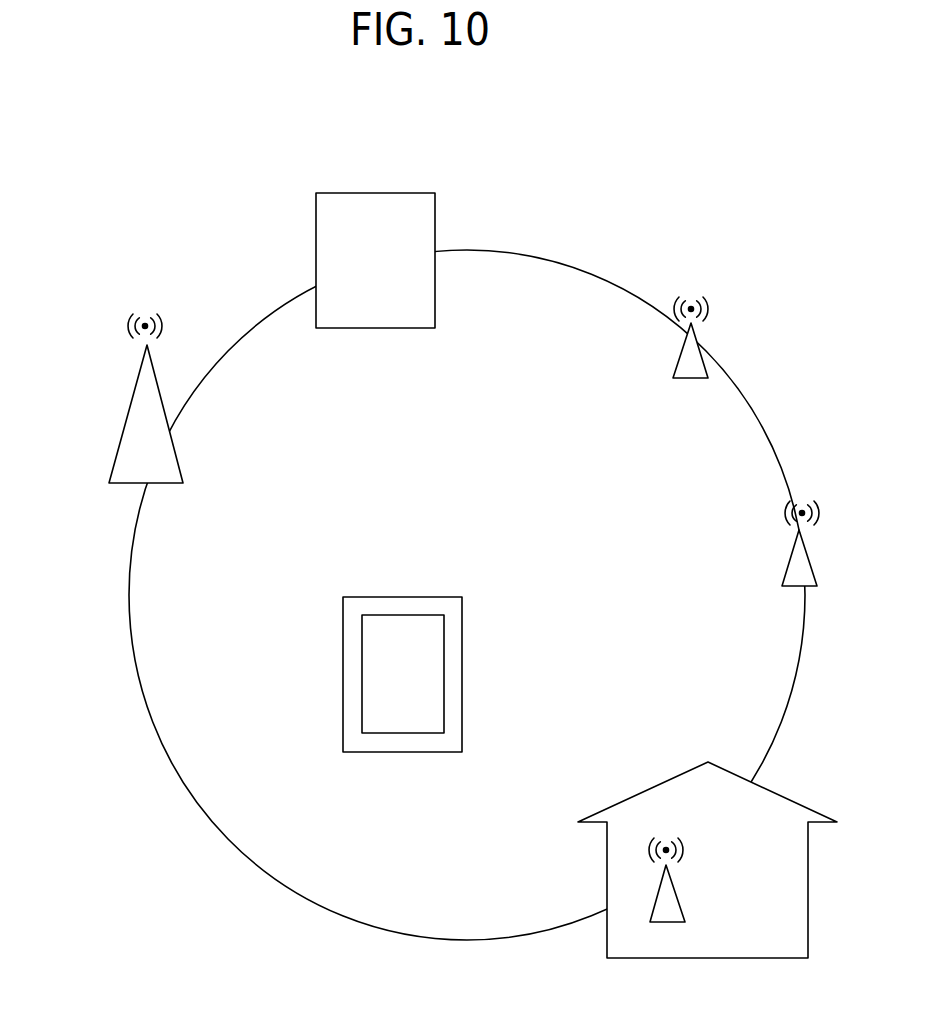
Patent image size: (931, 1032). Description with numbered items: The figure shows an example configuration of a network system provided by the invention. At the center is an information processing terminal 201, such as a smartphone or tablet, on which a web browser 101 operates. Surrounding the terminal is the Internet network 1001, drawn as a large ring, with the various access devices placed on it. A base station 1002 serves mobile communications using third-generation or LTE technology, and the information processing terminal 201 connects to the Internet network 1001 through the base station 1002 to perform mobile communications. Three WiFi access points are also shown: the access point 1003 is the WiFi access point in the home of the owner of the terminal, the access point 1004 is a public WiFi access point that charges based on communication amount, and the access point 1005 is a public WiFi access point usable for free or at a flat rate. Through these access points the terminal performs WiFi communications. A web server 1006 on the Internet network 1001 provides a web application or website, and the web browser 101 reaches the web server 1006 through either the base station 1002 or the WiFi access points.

The Internet network 1001 is at (168, 757).
The base station 1002 is at (128, 412).
The access point 1003 is at (678, 892).
The access point 1004 is at (790, 560).
The access point 1005 is at (676, 352).
The web server 1006 is at (382, 193).
The information processing terminal 201 is at (405, 596).
The web browser 101 is at (362, 672).